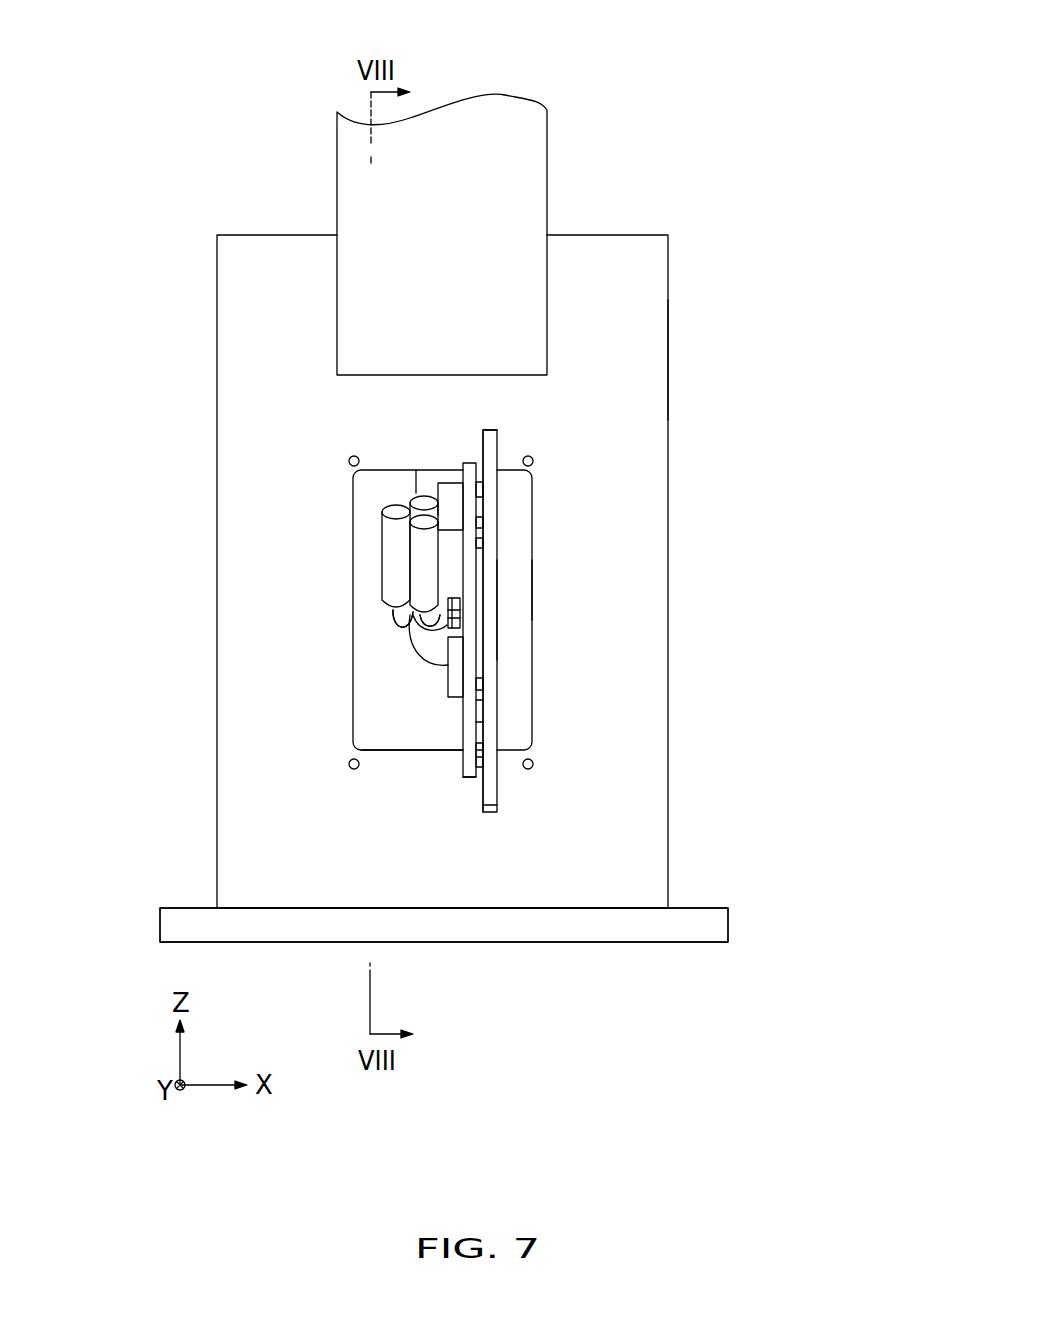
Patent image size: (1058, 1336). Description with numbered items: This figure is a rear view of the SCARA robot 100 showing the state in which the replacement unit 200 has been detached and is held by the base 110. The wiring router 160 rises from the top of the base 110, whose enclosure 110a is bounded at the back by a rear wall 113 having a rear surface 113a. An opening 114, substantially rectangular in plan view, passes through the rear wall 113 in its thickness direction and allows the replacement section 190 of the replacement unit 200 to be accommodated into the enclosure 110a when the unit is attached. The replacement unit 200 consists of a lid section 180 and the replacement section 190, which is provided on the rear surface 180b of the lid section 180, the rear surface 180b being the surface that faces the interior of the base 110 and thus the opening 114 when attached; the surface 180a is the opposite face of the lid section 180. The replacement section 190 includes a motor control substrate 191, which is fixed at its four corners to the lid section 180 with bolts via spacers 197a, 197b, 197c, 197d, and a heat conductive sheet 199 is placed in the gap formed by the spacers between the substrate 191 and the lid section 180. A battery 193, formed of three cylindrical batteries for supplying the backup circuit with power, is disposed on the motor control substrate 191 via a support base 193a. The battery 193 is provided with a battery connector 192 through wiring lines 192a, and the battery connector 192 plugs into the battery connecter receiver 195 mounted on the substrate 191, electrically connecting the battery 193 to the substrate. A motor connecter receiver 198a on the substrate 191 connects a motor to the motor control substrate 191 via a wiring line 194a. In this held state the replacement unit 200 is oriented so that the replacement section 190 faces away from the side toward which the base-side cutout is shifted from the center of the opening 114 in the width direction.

The SCARA robot 100 is at (725, 83).
The base 110 is at (655, 190).
The enclosure 110a is at (680, 366).
The rear wall 113 is at (653, 508).
The rear surface 113a is at (645, 590).
The opening 114 is at (520, 630).
The wiring router 160 is at (527, 140).
The lid section 180 is at (497, 447).
The board rear surface 180a is at (497, 608).
The rear surface 180b is at (480, 452).
The replacement section 190 is at (455, 752).
The motor control substrate 191 is at (470, 777).
The battery connector 192 is at (418, 640).
The wiring lines 192a is at (395, 643).
The battery 193 is at (378, 552).
The support base 193a is at (450, 492).
The wiring line 194a is at (437, 642).
The battery connecter receiver 195 is at (458, 614).
The spacer 197a is at (483, 489).
The spacer 197b is at (470, 683).
The spacer 197c is at (483, 763).
The spacer 197d is at (483, 543).
The motor connecter receiver 198a is at (453, 688).
The heat conductive sheet 199 is at (480, 722).
The replacement unit 200 is at (520, 420).